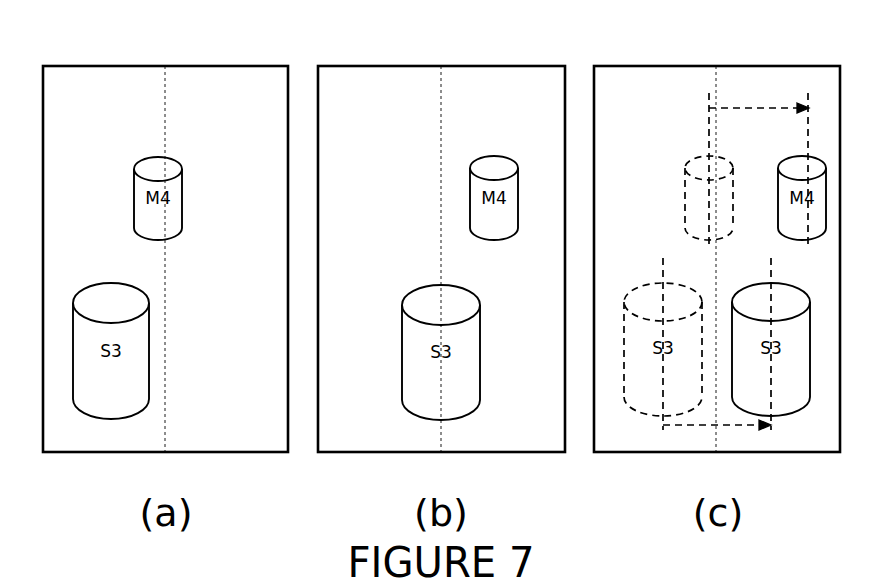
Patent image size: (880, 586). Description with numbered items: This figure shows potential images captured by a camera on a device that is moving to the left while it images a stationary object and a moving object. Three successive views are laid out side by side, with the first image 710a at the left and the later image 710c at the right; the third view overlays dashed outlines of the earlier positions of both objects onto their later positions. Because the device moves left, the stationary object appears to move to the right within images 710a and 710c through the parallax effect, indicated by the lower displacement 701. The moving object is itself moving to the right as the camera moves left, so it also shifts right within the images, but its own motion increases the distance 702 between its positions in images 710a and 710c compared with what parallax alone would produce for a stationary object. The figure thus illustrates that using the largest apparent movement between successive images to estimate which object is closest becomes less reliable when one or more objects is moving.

The image 710a is at (227, 65).
The image 710c is at (618, 70).
The movement of object S3 701 is at (738, 428).
The distance 702 is at (727, 102).